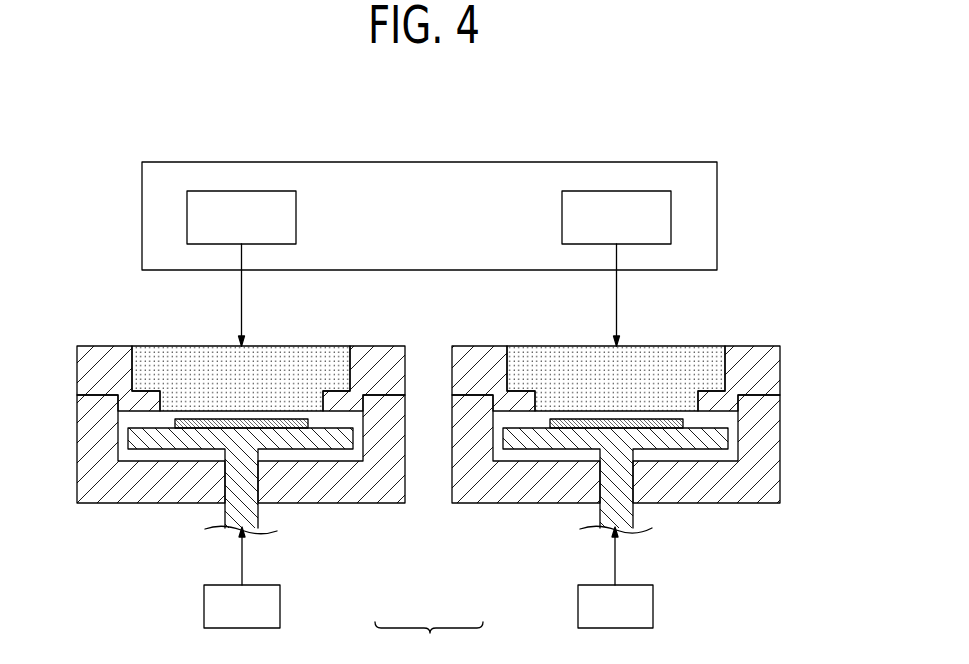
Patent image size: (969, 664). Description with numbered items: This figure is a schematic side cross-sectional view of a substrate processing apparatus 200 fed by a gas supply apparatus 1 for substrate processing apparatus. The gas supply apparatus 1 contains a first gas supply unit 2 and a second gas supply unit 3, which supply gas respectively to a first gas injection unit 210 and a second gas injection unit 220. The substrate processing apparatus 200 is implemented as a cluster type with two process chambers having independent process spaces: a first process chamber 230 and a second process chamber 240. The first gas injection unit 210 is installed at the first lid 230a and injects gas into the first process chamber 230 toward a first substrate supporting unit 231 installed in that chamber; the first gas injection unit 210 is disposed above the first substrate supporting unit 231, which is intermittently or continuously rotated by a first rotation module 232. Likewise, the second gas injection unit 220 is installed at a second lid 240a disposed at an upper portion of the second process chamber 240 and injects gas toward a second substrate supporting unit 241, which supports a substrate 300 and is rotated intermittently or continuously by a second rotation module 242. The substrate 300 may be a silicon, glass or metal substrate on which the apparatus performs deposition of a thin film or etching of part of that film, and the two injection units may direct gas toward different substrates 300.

The gas supply apparatus 1 is at (158, 160).
The first gas supply unit 2 is at (248, 232).
The second gas supply unit 3 is at (623, 232).
The substrate processing apparatus 200 is at (429, 642).
The first gas injection unit 210 is at (165, 363).
The second gas injection unit 220 is at (692, 360).
The first process chamber 230 is at (347, 505).
The first lid 230a is at (93, 362).
The first substrate supporting unit 231 is at (150, 440).
The first rotation module 232 is at (260, 624).
The second process chamber 240 is at (510, 505).
The second lid 240a is at (763, 360).
The second substrate supporting unit 241 is at (707, 442).
The second rotation module 242 is at (633, 624).
The substrate 300 is at (202, 427).